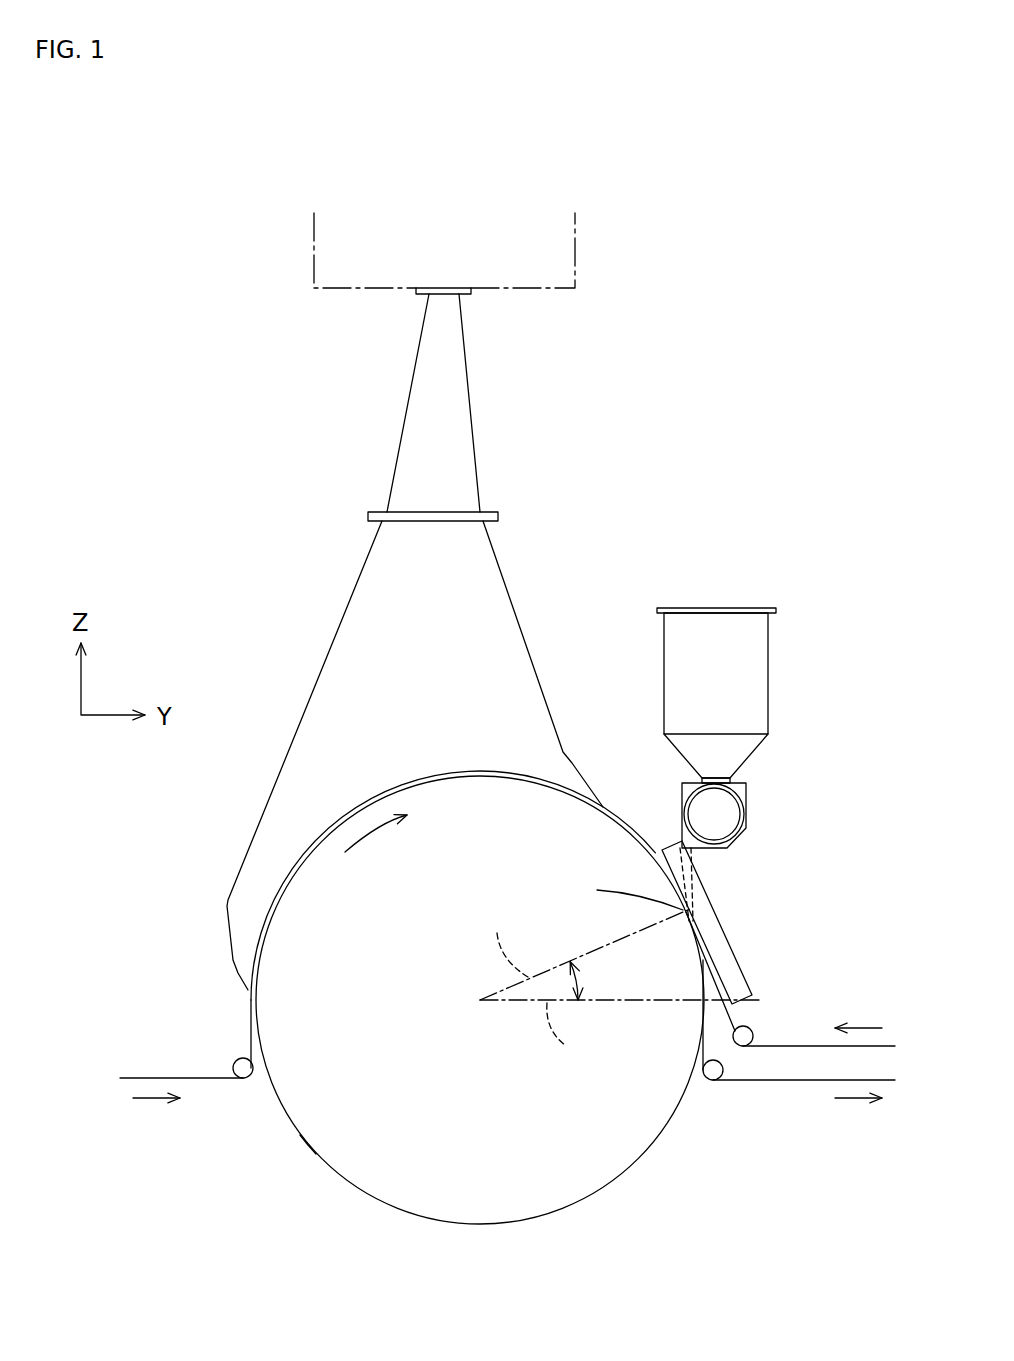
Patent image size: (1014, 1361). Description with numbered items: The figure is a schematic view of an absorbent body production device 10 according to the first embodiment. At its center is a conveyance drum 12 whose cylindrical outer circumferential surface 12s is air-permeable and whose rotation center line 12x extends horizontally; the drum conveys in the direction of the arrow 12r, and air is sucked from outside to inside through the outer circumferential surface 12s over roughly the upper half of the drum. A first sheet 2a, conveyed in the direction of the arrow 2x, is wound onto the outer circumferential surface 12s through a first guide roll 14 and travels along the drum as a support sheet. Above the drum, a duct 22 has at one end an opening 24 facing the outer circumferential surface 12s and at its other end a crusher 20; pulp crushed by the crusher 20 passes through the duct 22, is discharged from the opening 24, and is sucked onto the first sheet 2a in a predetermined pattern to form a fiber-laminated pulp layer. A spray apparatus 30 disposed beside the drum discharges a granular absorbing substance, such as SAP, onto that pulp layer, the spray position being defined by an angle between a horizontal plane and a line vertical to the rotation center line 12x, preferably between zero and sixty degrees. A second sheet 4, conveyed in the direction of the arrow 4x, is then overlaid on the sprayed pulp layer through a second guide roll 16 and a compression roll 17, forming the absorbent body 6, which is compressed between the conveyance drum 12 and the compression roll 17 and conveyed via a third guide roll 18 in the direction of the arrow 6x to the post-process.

The absorbent body production device 10 is at (773, 270).
The conveyance drum 12 is at (387, 1188).
The arrow indicating drum conveying direction 12r is at (375, 835).
The outer circumferential surface 12s is at (316, 1154).
The rotation center line 12x is at (480, 1002).
The first guide roll 14 is at (240, 1060).
The second guide roll 16 is at (749, 1028).
The compression roll 17 is at (694, 912).
The third guide roll 18 is at (708, 1080).
The crusher 20 is at (314, 232).
The duct 22 is at (335, 448).
The opening 24 is at (463, 776).
The first sheet 2a is at (175, 1076).
The arrow indicating first sheet conveying direction 2x is at (145, 1103).
The spray apparatus 30 is at (790, 600).
The second sheet 4 is at (810, 1045).
The arrow indicating second sheet conveying direction 4x is at (870, 1027).
The absorbent body 6 is at (772, 1082).
The arrow indicating absorbent body conveying direction 6x is at (843, 1102).